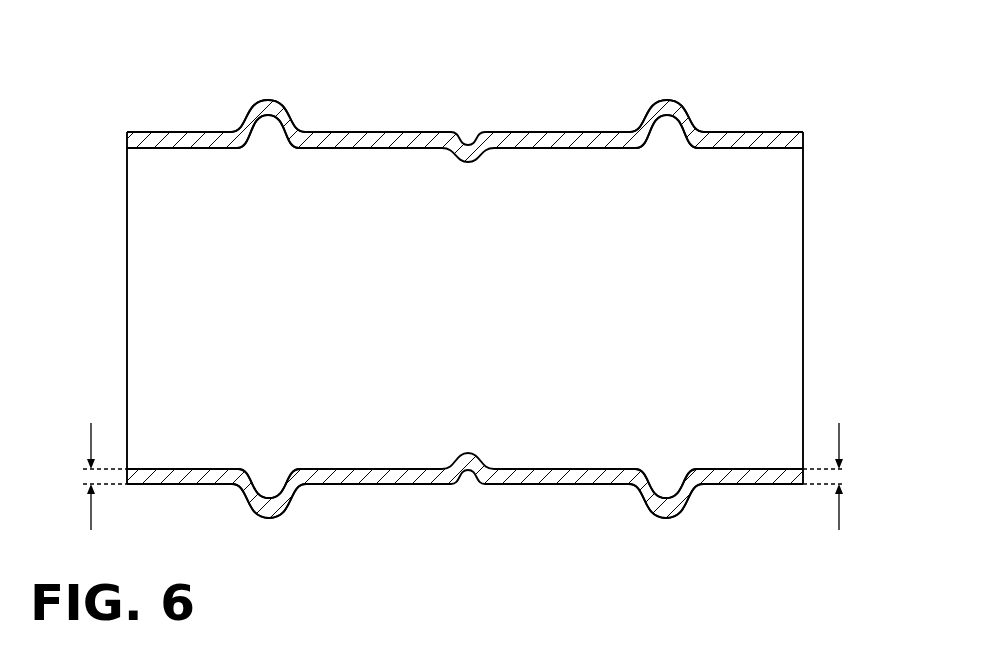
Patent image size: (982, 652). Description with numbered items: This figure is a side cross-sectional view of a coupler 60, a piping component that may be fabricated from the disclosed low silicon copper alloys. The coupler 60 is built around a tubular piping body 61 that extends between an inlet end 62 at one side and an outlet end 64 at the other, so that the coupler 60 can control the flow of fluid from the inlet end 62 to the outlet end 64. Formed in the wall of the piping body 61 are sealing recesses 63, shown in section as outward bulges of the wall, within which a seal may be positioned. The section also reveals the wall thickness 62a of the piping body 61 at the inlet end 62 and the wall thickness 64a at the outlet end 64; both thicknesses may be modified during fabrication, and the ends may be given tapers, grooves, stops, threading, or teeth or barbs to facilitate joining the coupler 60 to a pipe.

The coupler 60 is at (491, 272).
The piping body 61 is at (407, 132).
The inlet end 62 is at (127, 277).
The wall thickness 62a is at (83, 476).
The sealing recesses 63 is at (275, 118).
The outlet end 64 is at (803, 287).
The wall thickness 64a is at (845, 476).